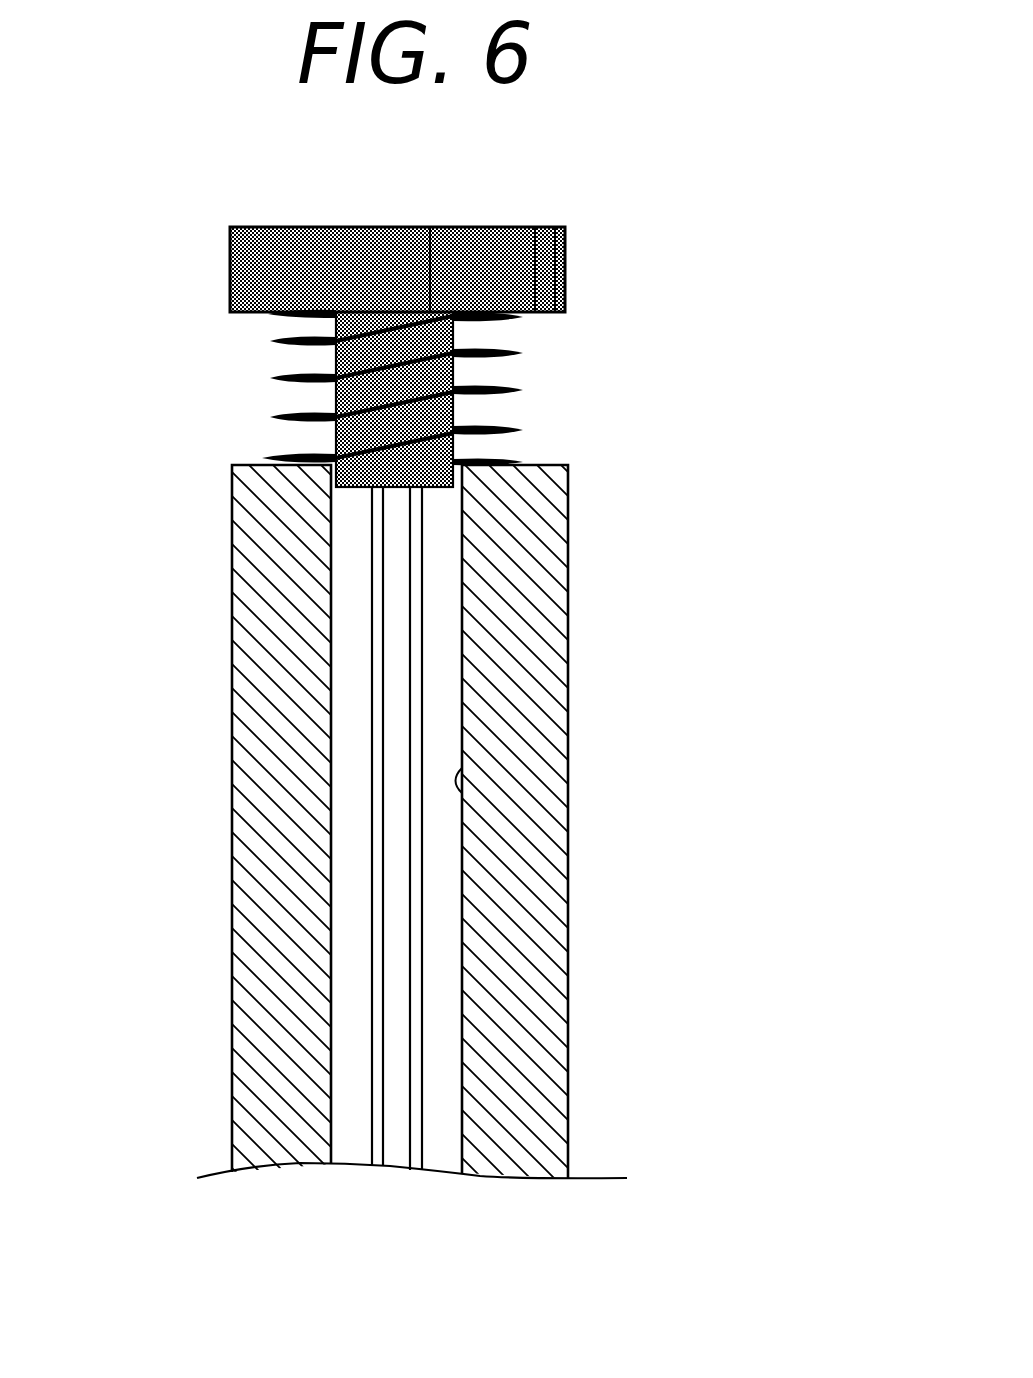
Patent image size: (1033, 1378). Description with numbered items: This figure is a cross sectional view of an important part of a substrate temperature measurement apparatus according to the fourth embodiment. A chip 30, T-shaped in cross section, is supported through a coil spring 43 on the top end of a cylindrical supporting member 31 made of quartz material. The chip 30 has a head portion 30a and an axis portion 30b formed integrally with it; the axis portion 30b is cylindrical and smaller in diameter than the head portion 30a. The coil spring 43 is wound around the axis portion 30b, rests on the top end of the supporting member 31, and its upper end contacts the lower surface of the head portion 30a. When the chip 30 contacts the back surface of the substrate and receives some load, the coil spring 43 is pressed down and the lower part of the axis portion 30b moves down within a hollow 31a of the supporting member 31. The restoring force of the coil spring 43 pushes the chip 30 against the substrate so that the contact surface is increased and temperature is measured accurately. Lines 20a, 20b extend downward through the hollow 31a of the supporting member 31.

The chip 30 is at (441, 297).
The head portion 30a is at (557, 273).
The axis portion 30b is at (338, 398).
The coil spring 43 is at (510, 385).
The supporting member 31 is at (537, 655).
The hollow 31a is at (470, 797).
The first lead wire 20a is at (372, 1113).
The second lead wire 20b is at (430, 1120).